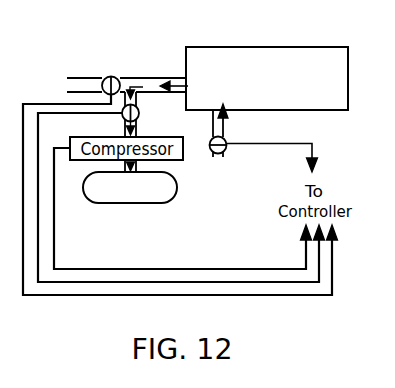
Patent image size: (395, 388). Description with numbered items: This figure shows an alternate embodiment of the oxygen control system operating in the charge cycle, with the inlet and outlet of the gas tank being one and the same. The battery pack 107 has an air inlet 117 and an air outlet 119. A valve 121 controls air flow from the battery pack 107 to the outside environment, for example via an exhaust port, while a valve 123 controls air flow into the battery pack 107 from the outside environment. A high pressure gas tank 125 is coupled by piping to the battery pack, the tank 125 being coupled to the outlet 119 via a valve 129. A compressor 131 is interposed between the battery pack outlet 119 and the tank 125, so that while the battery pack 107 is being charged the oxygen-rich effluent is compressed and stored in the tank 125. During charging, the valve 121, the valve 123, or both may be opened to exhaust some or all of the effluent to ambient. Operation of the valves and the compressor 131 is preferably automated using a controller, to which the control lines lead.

The battery pack 107 is at (280, 46).
The air inlet 117 is at (226, 107).
The air outlet 119 is at (189, 80).
The valve 121 is at (106, 77).
The valve 123 is at (227, 148).
The high pressure gas tank 125 is at (129, 204).
The valve 129 is at (139, 113).
The compressor 131 is at (143, 134).